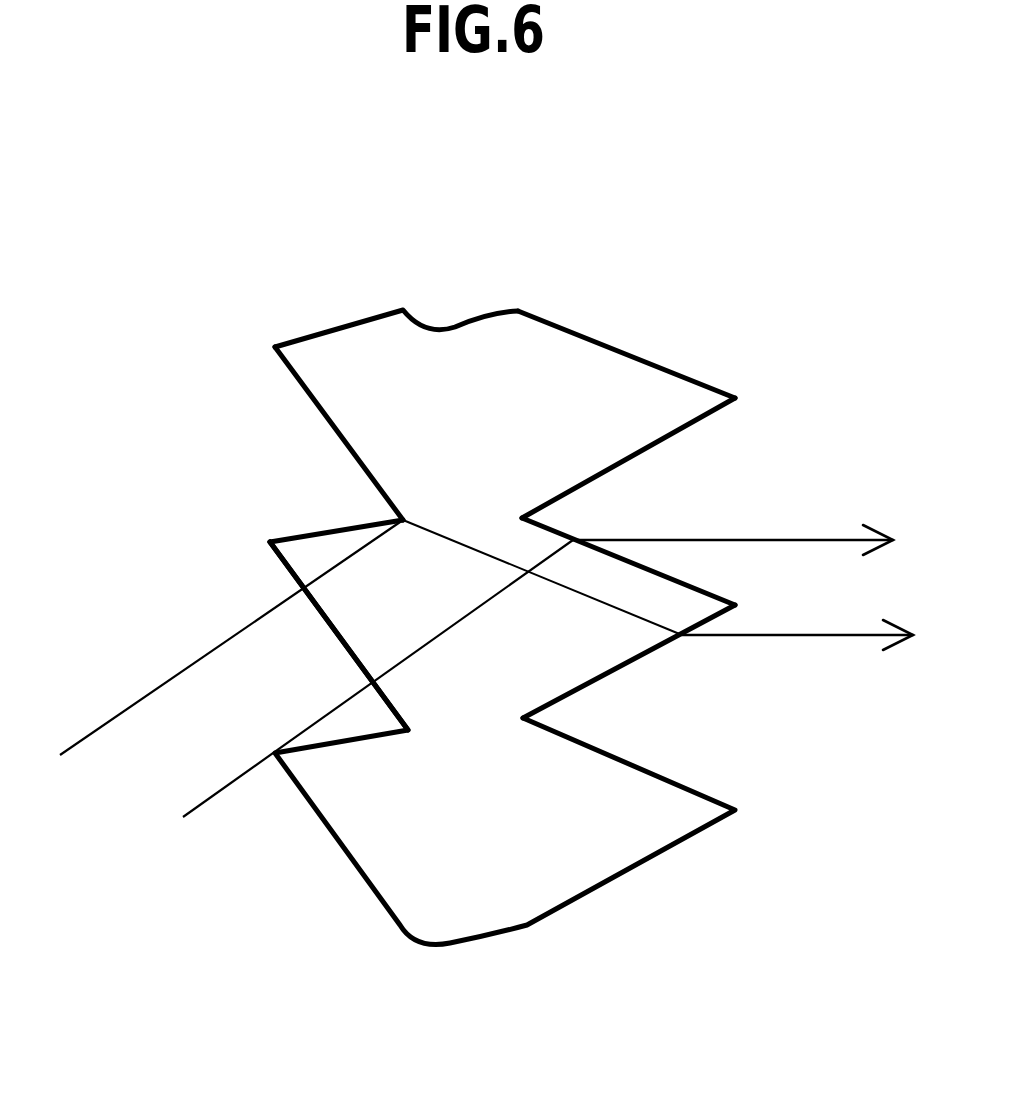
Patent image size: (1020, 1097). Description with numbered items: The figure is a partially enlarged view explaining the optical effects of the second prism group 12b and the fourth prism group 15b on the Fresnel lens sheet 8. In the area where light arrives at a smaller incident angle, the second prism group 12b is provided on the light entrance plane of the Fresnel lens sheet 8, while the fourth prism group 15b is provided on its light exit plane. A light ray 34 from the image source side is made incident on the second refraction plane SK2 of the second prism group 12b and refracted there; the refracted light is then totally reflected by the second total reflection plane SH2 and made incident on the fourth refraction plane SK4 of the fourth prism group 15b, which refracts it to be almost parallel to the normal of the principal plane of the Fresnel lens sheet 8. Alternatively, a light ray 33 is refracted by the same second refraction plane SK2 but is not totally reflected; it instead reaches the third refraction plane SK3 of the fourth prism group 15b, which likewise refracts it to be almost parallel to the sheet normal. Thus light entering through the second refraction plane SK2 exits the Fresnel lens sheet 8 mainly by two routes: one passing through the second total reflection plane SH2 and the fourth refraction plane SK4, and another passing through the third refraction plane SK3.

The Fresnel lens sheet 8 is at (457, 343).
The second prism group 12b is at (348, 392).
The fourth prism group 15b is at (660, 388).
The second total reflection plane SH2 is at (307, 532).
The second refraction plane SK2 is at (300, 566).
The third refraction plane SK3 is at (652, 567).
The fourth refraction plane SK4 is at (613, 673).
The light ray 33 is at (220, 792).
The light ray 34 is at (105, 722).